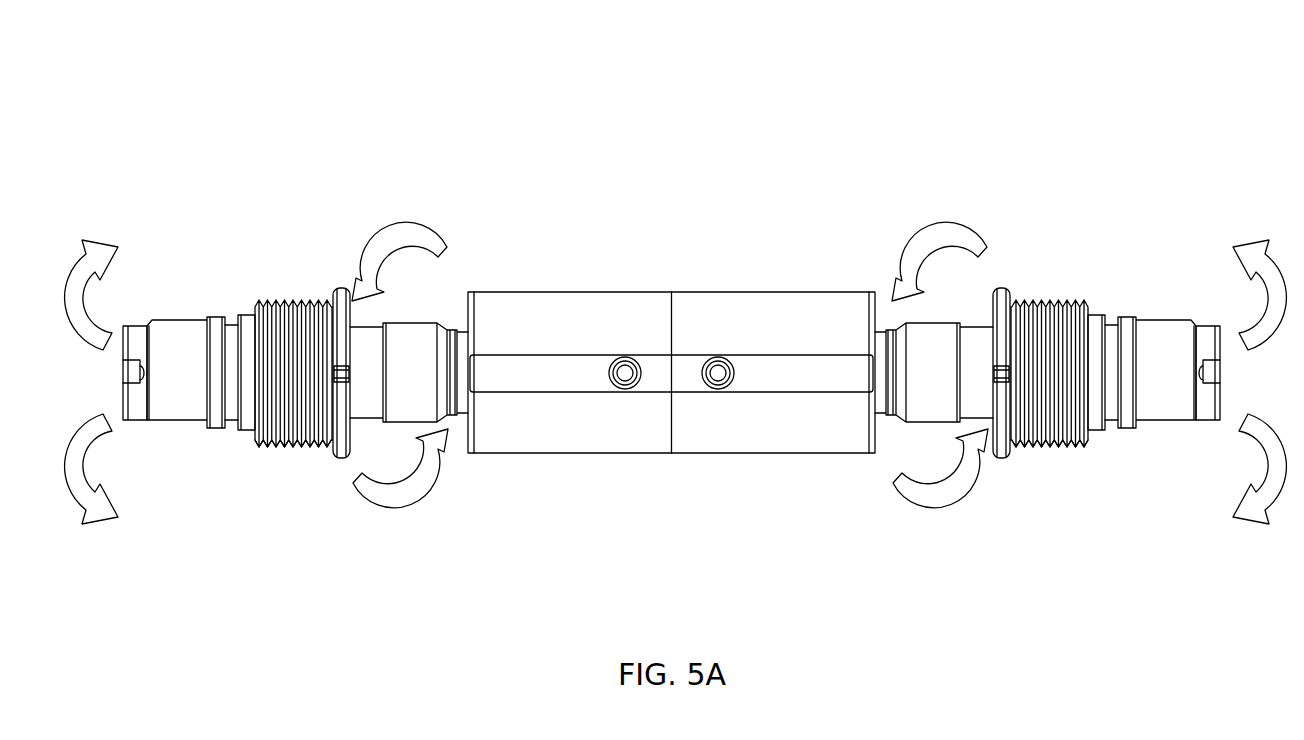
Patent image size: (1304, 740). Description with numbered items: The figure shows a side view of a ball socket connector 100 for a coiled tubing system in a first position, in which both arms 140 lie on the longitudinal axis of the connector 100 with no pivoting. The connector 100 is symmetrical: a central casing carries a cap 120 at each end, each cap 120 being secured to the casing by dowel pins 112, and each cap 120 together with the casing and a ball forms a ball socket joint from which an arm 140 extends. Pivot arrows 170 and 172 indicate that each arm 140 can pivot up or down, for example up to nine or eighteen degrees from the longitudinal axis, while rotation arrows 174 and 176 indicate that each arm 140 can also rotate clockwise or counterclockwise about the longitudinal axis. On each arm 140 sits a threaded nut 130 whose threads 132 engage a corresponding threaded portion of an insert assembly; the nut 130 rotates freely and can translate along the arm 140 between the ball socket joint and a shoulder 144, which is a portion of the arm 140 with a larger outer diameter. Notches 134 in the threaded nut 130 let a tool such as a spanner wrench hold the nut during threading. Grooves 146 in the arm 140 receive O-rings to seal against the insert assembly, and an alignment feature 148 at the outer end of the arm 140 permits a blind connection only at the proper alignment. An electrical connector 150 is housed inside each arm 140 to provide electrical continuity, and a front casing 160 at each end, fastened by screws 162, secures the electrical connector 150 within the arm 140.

The connector 100 is at (1201, 69).
The dowel pins 112 is at (625, 392).
The cap 120 is at (527, 292).
The threaded nut 130 is at (297, 301).
The threads 132 is at (295, 447).
The notches 134 is at (350, 378).
The arm 140 is at (412, 323).
The shoulder 144 is at (242, 316).
The grooves 146 is at (232, 421).
The alignment feature 148 is at (168, 320).
The electrical connector 150 is at (123, 377).
The front casing 160 is at (123, 420).
The screws 162 is at (140, 384).
The pivot arrow 170 is at (100, 242).
The pivot arrow 172 is at (100, 516).
The rotation arrow 174 is at (408, 220).
The rotation arrow 176 is at (397, 508).